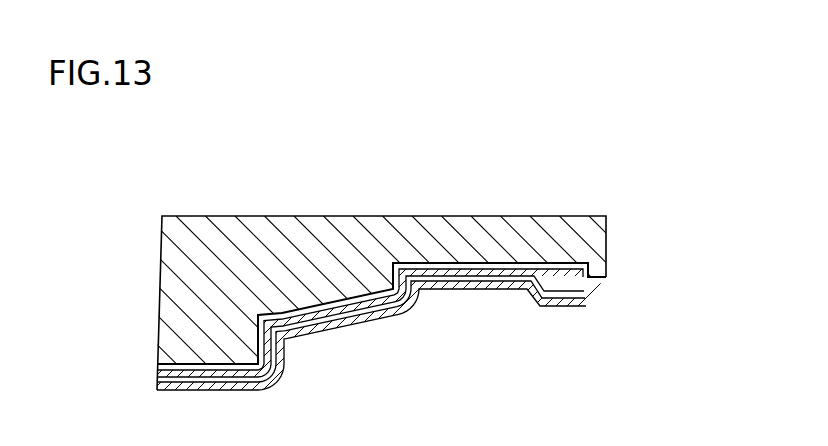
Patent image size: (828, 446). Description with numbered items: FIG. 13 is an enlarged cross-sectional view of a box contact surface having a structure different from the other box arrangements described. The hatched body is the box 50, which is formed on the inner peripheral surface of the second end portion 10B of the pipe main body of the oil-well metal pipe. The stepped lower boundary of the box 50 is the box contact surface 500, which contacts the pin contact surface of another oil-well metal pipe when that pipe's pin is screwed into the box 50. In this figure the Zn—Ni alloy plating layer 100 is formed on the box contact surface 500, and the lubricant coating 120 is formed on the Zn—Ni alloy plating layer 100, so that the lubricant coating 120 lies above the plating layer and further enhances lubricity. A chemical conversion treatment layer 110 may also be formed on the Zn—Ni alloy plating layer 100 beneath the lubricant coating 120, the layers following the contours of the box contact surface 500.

The second end portion 10B is at (513, 198).
The box 50 is at (491, 324).
The Zn—Ni alloy plating layer 100 is at (606, 268).
The chemical conversion treatment layer 110 is at (605, 278).
The lubricant coating 120 is at (596, 303).
The box contact surface 500 is at (437, 271).